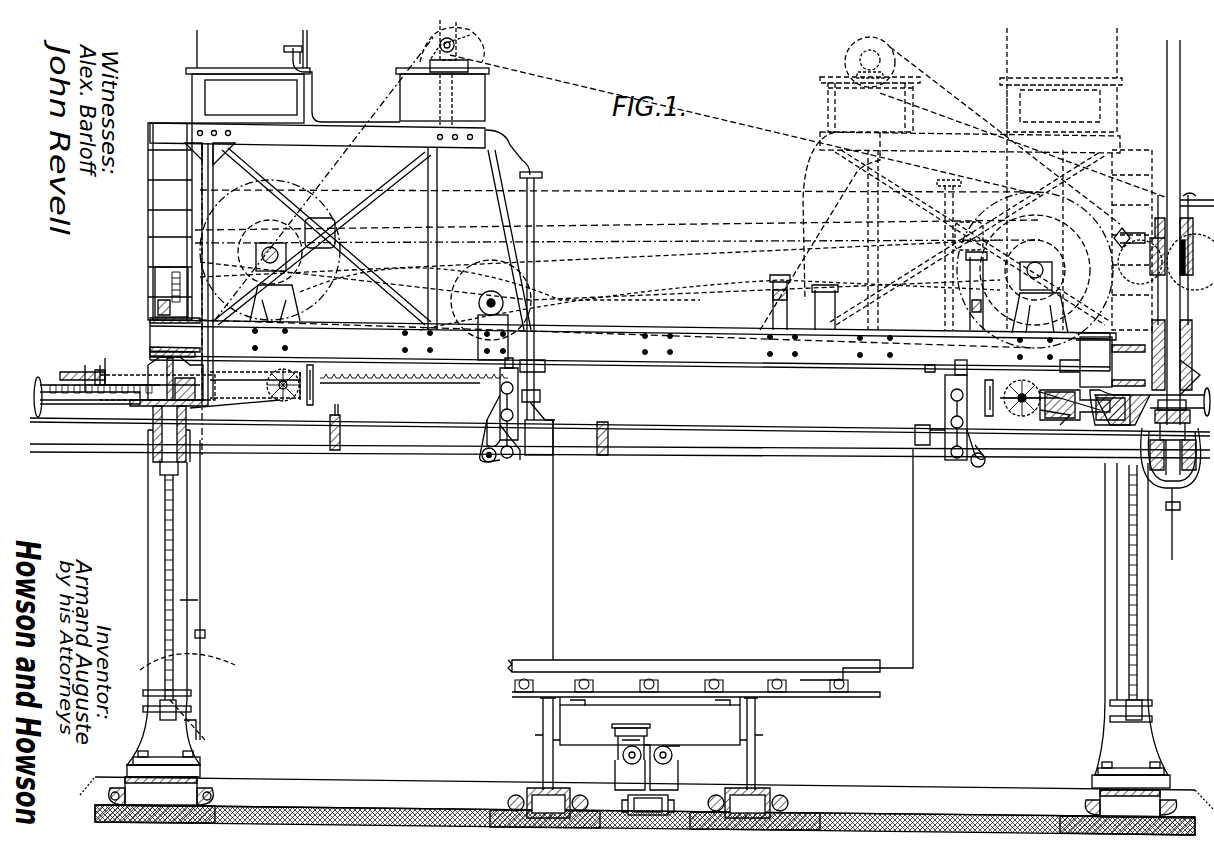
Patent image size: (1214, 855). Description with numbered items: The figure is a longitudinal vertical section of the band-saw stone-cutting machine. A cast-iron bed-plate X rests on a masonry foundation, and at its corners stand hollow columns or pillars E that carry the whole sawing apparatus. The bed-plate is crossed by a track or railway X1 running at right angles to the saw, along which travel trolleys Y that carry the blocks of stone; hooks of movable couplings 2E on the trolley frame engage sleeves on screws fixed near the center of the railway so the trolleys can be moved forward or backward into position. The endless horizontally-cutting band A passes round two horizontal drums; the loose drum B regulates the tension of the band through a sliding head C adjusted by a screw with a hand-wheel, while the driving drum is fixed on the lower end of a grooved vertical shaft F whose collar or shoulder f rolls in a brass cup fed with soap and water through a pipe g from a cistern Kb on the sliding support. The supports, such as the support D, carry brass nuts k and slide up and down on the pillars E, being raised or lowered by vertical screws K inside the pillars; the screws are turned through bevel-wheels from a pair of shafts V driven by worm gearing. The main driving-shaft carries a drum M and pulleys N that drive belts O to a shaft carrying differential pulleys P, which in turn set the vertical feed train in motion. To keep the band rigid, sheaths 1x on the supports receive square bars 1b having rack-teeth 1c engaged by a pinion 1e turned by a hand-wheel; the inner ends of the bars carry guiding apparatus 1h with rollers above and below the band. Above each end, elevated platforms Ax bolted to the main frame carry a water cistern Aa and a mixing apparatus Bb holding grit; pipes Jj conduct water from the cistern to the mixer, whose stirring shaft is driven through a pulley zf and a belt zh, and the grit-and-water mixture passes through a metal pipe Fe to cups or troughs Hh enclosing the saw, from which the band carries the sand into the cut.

The bed-plate X is at (647, 806).
The track or railway X1 is at (648, 794).
The hollow columns or pillars E is at (643, 639).
The vertical screws K is at (647, 592).
The brass nut k is at (187, 590).
The drum B is at (620, 436).
The endless horizontally-cutting band A is at (733, 550).
The elevated platforms Ax is at (635, 247).
The water-cistern Aa is at (650, 241).
The belt zh is at (661, 180).
The pipes Jj is at (653, 188).
The mixing apparatus Bb is at (657, 72).
The pulley zf is at (791, 129).
The metal pipe Fe is at (730, 275).
The drum M is at (270, 250).
The pulley N is at (264, 270).
The differential pulley P is at (782, 276).
The belt O is at (624, 269).
The shaft V is at (869, 291).
The support D is at (640, 407).
The sliding head C is at (620, 391).
The square bar 1b is at (147, 376).
The sheath 1x is at (255, 383).
The rack-teeth 1c is at (256, 389).
The guiding apparatus 1h is at (414, 388).
The cups or troughs Hh is at (723, 413).
The cistern Kb is at (1102, 360).
The pinion 1e is at (1040, 400).
The pipe g is at (1110, 407).
The grooved vertical shaft F is at (1164, 232).
The collar or shoulder f is at (1173, 491).
The trolleys Y is at (690, 725).
The movable couplings 2E is at (645, 751).